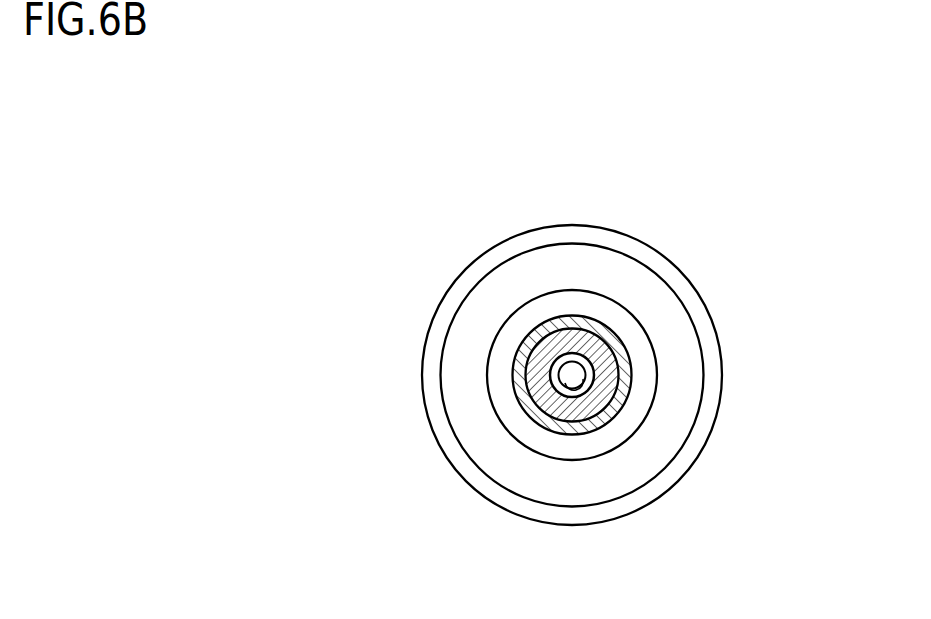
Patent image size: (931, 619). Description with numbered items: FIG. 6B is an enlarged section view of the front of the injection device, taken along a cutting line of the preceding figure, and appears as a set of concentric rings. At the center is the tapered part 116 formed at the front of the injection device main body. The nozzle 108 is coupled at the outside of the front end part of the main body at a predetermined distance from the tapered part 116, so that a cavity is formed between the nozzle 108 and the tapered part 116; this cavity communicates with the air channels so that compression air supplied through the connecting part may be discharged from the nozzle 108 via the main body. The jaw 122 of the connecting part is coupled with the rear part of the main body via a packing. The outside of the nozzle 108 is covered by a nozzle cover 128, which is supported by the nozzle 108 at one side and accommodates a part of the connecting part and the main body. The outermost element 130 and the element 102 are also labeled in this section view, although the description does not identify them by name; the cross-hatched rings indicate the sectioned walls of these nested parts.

The shaft 102 is at (583, 390).
The nozzle 108 is at (540, 360).
The tapered part 116 is at (562, 358).
The jaw 122 is at (585, 362).
The nozzle cover 128 is at (523, 398).
The housing 130 is at (523, 375).